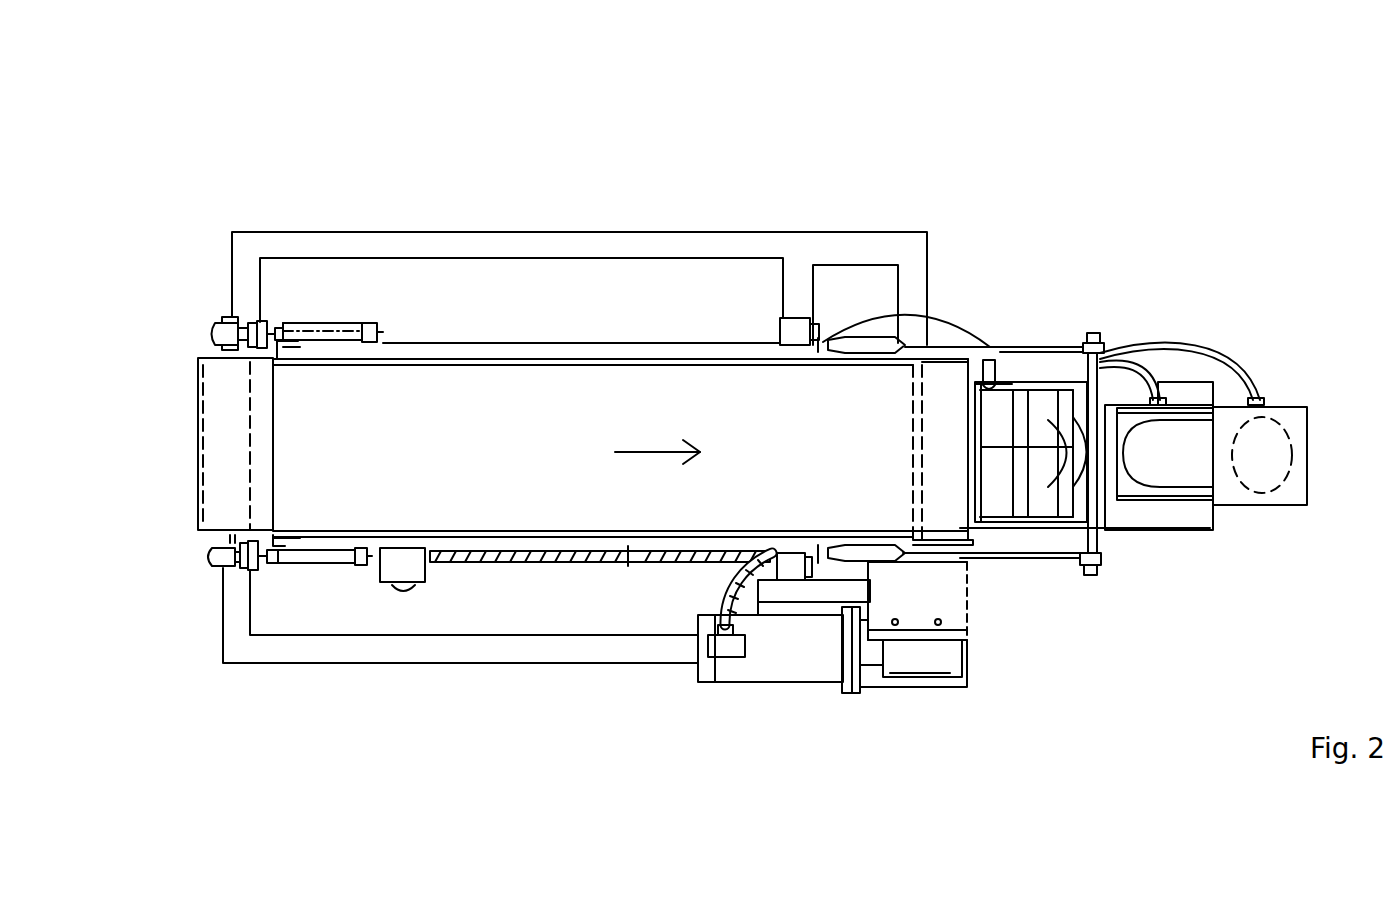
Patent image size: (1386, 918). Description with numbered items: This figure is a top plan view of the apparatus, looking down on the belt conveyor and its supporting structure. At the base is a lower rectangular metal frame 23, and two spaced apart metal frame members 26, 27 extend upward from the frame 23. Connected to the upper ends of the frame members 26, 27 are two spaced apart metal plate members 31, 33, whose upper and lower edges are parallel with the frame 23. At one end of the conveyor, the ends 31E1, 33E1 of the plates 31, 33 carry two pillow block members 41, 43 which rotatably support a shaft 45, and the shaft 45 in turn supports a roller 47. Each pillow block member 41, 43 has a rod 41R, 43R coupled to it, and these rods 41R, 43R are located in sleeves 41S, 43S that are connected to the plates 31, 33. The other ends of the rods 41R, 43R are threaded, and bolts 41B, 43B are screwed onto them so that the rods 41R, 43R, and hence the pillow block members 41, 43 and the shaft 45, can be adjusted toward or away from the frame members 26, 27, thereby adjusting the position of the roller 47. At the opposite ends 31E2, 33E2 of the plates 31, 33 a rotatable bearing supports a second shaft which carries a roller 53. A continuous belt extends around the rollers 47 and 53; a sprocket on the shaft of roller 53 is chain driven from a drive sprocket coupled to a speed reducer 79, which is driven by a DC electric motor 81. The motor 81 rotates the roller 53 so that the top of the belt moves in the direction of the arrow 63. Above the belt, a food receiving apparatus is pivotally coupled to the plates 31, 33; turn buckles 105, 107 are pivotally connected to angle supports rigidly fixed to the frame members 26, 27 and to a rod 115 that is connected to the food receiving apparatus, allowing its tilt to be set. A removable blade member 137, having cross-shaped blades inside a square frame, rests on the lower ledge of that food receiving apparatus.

The lower rectangular metal frame 23 is at (648, 240).
The frame member 26 is at (788, 575).
The frame member 27 is at (797, 318).
The plate member 31 is at (595, 545).
The end of plate 31E1 is at (283, 538).
The other end of plate 31E2 is at (967, 557).
The plate member 33 is at (678, 353).
The end of plate 33E1 is at (297, 347).
The other end of plate 33E2 is at (940, 353).
The pillow block member 41 is at (205, 553).
The bolt 41B is at (363, 567).
The rod 41R is at (308, 555).
The sleeve 41S is at (333, 563).
The pillow block member 43 is at (210, 333).
The bolt 43B is at (375, 330).
The rod 43R is at (318, 332).
The sleeve 43S is at (348, 322).
The shaft 45 is at (213, 570).
The roller 47 is at (218, 448).
The roller 53 is at (942, 453).
The arrow 63 is at (637, 452).
The speed reducer 79 is at (918, 650).
The DC electric motor 81 is at (807, 658).
The turn buckle 105 is at (998, 557).
The turn buckle 107 is at (997, 347).
The rod 115 is at (1097, 540).
The blade member 137 is at (1030, 450).